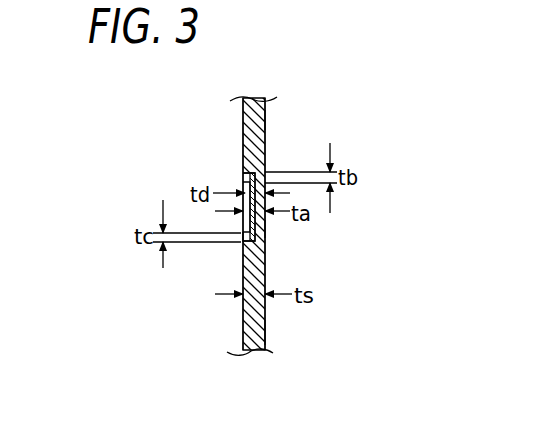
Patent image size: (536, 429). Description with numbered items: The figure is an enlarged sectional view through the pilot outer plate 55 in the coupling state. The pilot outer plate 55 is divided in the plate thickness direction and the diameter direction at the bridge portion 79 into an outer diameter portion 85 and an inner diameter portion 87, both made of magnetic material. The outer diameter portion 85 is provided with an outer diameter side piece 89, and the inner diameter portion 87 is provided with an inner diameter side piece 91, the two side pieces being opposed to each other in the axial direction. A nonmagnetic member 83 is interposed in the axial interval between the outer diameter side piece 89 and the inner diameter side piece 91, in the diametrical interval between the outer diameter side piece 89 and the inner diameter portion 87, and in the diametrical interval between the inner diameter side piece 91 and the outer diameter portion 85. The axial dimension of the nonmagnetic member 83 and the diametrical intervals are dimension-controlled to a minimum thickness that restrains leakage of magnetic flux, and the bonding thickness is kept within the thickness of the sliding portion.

The pilot outer plate 55 is at (267, 142).
The bridge portion 79 is at (243, 180).
The nonmagnetic member 83 is at (245, 172).
The outer diameter portion 85 is at (265, 332).
The inner diameter portion 87 is at (267, 122).
The outer diameter side piece 89 is at (265, 228).
The inner diameter side piece 91 is at (243, 222).